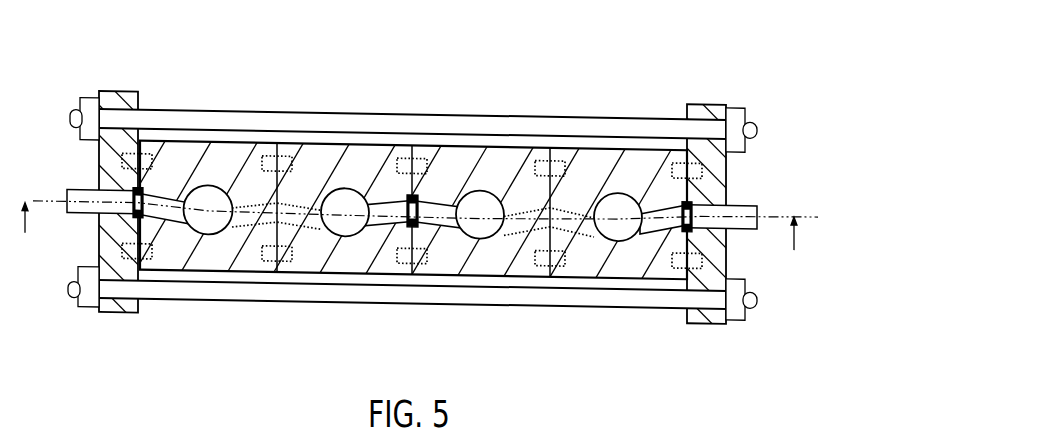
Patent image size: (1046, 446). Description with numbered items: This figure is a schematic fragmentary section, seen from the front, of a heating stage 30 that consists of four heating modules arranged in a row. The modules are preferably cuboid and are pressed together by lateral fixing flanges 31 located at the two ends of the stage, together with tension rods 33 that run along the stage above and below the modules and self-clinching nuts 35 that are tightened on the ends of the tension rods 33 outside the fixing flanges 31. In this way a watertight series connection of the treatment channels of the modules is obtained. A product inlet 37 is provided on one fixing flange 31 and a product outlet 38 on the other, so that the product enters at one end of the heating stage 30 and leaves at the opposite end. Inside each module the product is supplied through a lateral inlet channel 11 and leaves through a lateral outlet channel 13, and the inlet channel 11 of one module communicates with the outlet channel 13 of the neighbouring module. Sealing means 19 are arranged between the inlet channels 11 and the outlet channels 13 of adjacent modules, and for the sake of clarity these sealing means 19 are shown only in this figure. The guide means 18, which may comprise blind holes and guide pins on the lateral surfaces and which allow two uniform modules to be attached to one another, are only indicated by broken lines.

The heating stage 30 is at (418, 190).
The fixing flanges 31 is at (110, 162).
The tension rods 33 is at (470, 119).
The self-clinching nuts 35 is at (733, 104).
The product inlet 37 is at (82, 211).
The product outlet 38 is at (753, 211).
The guide means 18 is at (283, 155).
The lateral outlet channel 13 is at (370, 218).
The sealing means 19 is at (403, 224).
The lateral inlet channel 11 is at (440, 216).